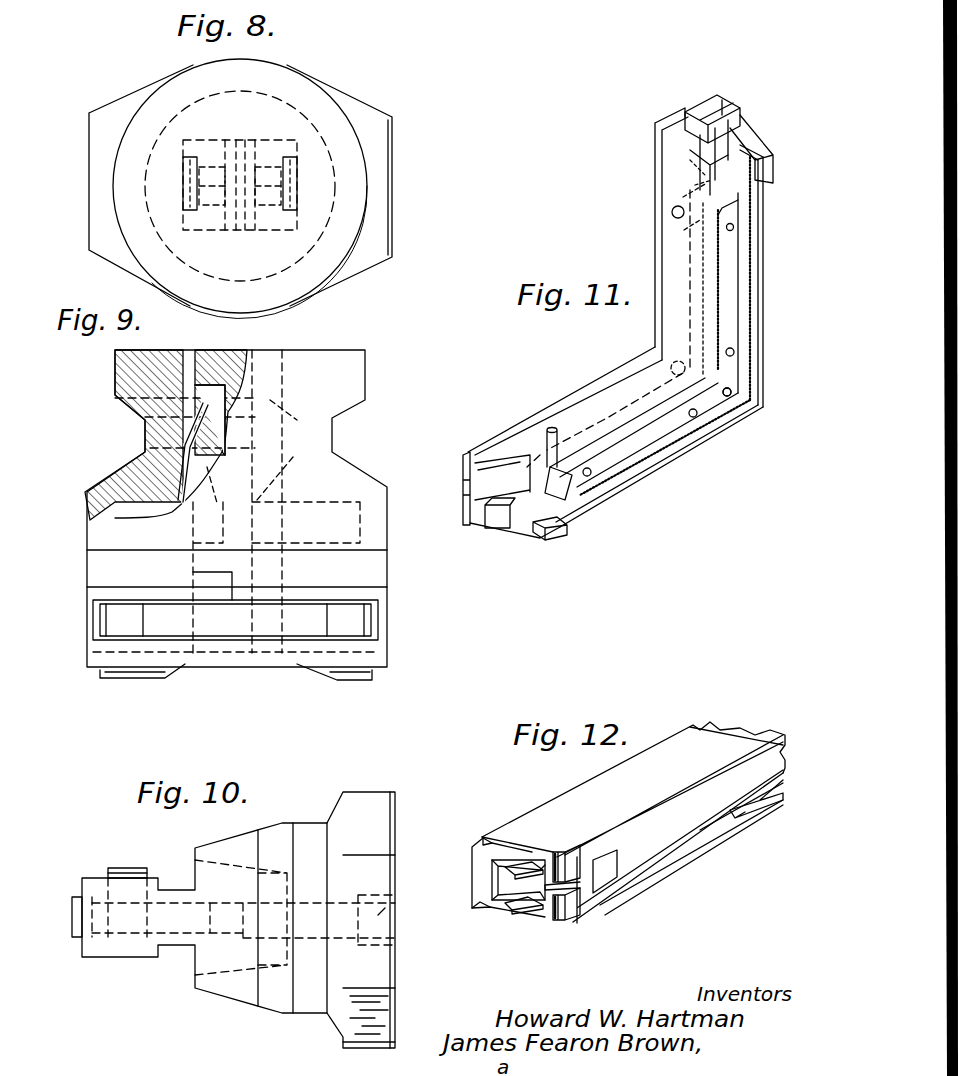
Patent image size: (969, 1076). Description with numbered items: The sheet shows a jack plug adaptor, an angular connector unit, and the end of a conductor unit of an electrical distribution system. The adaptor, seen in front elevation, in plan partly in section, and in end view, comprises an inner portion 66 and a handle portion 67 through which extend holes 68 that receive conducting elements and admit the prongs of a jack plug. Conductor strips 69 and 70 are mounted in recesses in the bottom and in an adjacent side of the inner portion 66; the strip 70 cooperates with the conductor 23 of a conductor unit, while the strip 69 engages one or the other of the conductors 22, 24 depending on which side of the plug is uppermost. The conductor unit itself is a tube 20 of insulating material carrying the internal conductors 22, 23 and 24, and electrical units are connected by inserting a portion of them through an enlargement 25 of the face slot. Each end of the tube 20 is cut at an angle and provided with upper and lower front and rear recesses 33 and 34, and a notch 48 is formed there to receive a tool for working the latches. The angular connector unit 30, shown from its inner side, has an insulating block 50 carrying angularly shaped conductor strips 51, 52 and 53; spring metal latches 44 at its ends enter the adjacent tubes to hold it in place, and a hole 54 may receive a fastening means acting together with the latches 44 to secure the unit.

In FIG. 12, the tube of insulating material 20 is at (543, 808).
In FIG. 12, the internal conductor 22 is at (523, 910).
In FIG. 12, the internal conductor 23 is at (497, 877).
In FIG. 12, the internal conductor 24 is at (530, 860).
In FIG. 12, the enlargement of the slot 25 is at (673, 843).
In FIG. 11, the angle bracket 30 is at (648, 220).
In FIG. 12, the front recess 33 is at (570, 853).
In FIG. 12, the rear recess 34 is at (487, 846).
In FIG. 11, the spring metal latch 44 is at (728, 108).
In FIG. 12, the notch 48 is at (580, 890).
In FIG. 11, the insulating block 50 is at (623, 390).
In FIG. 11, the conductor strip 51 is at (728, 308).
In FIG. 11, the conductor strip 52 is at (463, 505).
In FIG. 11, the conductor strip 53 is at (492, 533).
In FIG. 11, the hole 54 is at (733, 400).
In FIG. 9, the inner portion 66 is at (87, 640).
In FIG. 10, the inner portion 66 is at (88, 878).
In FIG. 8, the handle portion 67 is at (347, 197).
In FIG. 9, the handle portion 67 is at (350, 380).
In FIG. 10, the handle portion 67 is at (370, 808).
In FIG. 8, the holes 68 is at (290, 158).
In FIG. 9, the holes 68 is at (182, 370).
In FIG. 10, the holes 68 is at (388, 895).
In FIG. 9, the conductor strip 69 is at (222, 627).
In FIG. 10, the conductor strip 69 is at (128, 868).
In FIG. 9, the conductor strip 70 is at (365, 683).
In FIG. 10, the conductor strip 70 is at (72, 910).